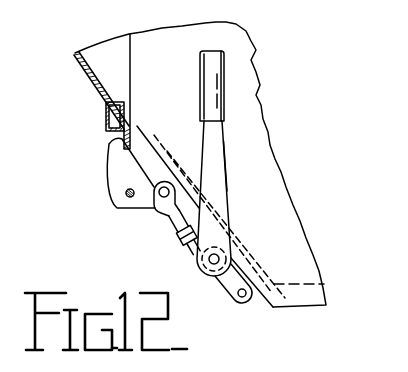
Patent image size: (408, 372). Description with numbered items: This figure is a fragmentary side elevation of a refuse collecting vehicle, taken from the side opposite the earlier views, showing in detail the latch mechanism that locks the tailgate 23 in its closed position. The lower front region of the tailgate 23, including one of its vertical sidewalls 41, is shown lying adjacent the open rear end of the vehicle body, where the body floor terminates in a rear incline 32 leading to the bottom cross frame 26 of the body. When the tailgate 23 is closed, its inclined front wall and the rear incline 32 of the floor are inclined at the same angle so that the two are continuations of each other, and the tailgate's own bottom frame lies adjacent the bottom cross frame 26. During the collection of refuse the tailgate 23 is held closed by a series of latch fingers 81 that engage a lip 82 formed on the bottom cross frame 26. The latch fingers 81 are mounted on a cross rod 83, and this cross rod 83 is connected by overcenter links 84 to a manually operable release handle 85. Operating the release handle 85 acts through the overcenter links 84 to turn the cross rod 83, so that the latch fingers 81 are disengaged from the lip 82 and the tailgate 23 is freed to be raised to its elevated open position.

The tailgate 23 is at (251, 45).
The bottom cross frame 26 is at (99, 111).
The rear incline 32 is at (82, 70).
The sidewall 41 is at (236, 109).
The latch fingers 81 is at (101, 177).
The lip 82 is at (122, 140).
The cross rod 83 is at (122, 189).
The overcenter links 84 is at (218, 286).
The release handle 85 is at (217, 166).